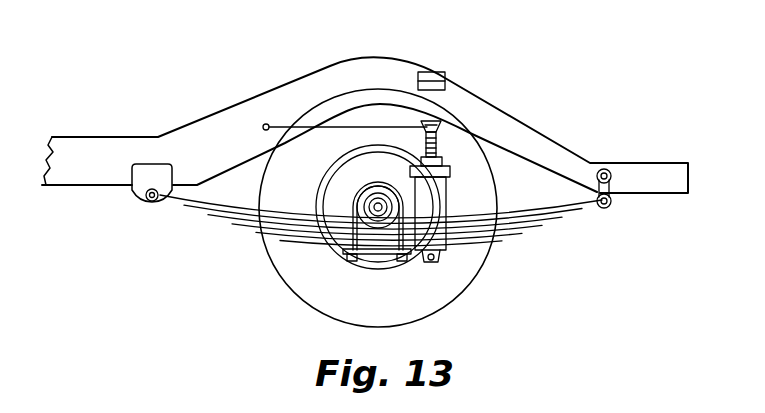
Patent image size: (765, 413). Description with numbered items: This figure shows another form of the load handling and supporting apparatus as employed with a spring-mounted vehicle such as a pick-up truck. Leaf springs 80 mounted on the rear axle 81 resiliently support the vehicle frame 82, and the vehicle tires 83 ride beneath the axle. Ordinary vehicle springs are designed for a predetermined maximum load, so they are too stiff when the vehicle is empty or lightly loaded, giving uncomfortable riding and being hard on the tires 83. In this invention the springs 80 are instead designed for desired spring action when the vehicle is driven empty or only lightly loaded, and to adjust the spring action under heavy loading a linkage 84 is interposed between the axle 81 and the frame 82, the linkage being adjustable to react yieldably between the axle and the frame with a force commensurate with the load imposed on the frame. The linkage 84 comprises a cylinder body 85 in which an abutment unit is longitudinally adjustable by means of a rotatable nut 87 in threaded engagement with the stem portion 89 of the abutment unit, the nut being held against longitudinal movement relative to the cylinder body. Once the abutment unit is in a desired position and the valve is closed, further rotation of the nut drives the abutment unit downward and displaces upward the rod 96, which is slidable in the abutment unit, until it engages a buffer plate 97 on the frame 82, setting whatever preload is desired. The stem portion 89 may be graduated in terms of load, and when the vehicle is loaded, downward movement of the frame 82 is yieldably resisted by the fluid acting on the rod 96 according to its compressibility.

The leaf springs 80 is at (237, 227).
The rear axle 81 is at (377, 202).
The vehicle frame 82 is at (279, 92).
The vehicle tires 83 is at (305, 290).
The linkage 84 is at (455, 199).
The cylinder body 85 is at (448, 212).
The rotatable nut 87 is at (436, 165).
The stem portion 89 is at (438, 151).
The rod 96 is at (433, 122).
The buffer plate 97 is at (440, 73).